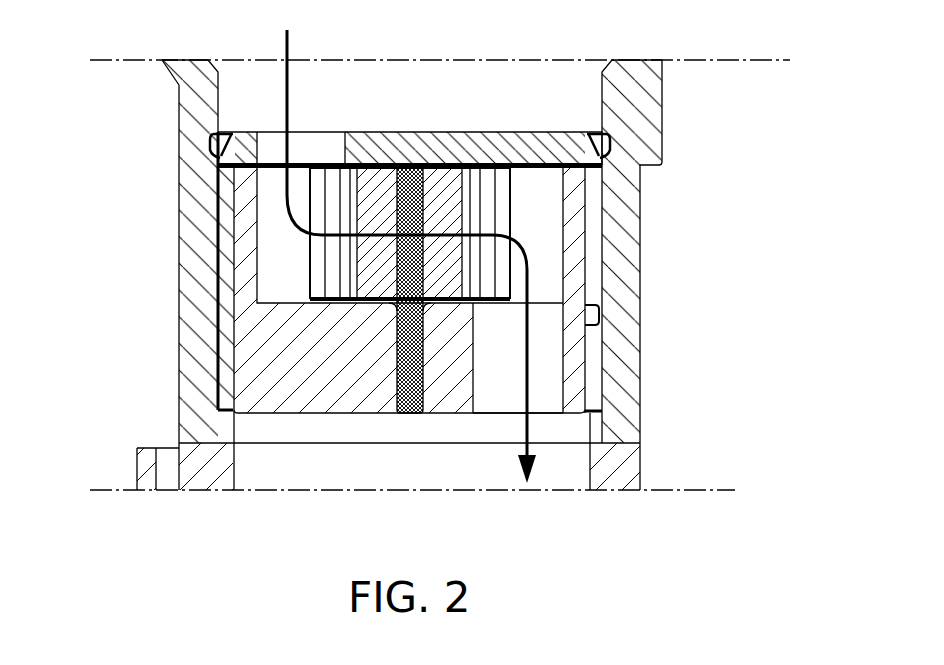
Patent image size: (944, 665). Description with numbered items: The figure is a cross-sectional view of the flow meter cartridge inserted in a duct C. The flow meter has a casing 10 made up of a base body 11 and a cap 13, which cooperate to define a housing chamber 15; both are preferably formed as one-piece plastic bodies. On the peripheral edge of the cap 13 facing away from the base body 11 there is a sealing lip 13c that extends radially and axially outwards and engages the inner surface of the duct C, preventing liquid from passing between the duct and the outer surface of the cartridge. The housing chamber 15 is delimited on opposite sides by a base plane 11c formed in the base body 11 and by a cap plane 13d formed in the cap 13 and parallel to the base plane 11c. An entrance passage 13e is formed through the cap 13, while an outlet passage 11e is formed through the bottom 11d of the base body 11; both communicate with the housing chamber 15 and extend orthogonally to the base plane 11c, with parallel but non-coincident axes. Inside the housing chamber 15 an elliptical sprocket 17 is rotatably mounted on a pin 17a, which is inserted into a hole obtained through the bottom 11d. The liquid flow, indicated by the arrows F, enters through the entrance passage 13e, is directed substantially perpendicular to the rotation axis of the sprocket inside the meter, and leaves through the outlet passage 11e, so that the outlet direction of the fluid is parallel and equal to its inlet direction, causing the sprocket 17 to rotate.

The casing 10 is at (198, 250).
The base body 11 is at (285, 419).
The base plane 11c is at (322, 407).
The bottom 11d is at (453, 375).
The outlet passage 11e is at (545, 392).
The cap 13 is at (489, 205).
The sealing lip 13c is at (607, 134).
The cap plane 13d is at (340, 180).
The entrance passage 13e is at (268, 148).
The housing chamber 15 is at (256, 268).
The elliptical sprocket 17 is at (488, 182).
The pin 17a is at (407, 197).
The liquid flow arrows F is at (285, 194).
The duct C is at (176, 353).